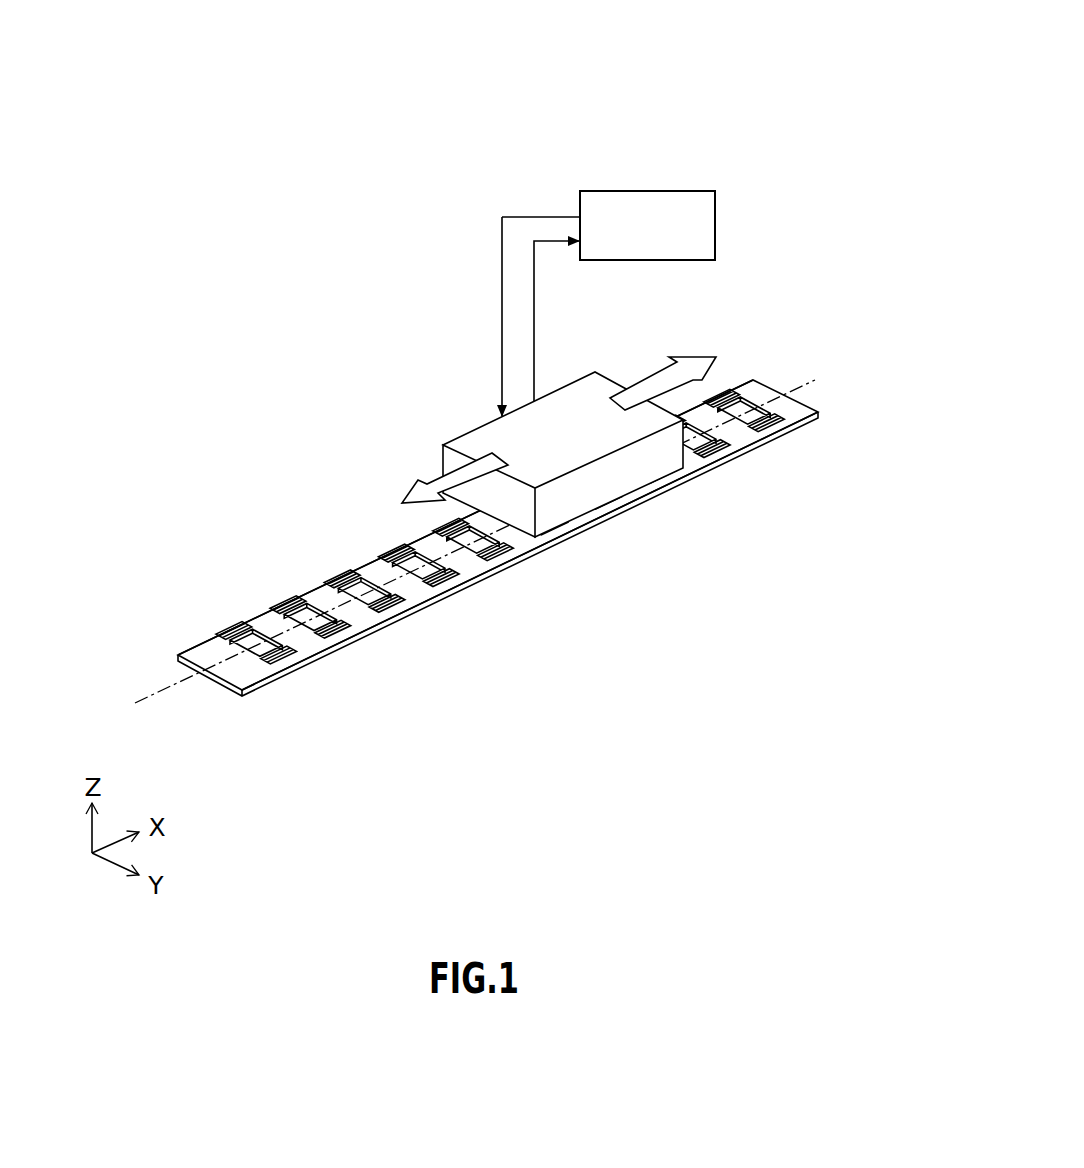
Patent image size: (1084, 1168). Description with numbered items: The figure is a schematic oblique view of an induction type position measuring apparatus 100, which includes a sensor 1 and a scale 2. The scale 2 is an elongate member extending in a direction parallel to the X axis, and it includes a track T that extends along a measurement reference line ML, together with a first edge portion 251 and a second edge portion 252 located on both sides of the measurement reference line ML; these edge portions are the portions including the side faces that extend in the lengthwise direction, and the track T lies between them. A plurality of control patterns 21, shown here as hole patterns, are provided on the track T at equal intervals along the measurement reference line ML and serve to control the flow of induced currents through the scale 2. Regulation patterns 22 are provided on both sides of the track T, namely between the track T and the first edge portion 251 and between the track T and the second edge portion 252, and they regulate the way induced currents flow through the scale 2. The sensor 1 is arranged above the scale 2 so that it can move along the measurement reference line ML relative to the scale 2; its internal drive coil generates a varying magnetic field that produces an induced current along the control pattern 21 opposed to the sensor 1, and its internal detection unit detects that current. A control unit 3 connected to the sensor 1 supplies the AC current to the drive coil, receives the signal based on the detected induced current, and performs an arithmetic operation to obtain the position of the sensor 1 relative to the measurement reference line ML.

The induction type position measuring apparatus 100 is at (704, 96).
The sensor 1 is at (476, 421).
The scale 2 is at (306, 584).
The control unit 3 is at (695, 221).
The control pattern 21 is at (299, 655).
The regulation pattern 22 is at (390, 550).
The first edge portion 251 is at (248, 619).
The second edge portion 252 is at (358, 633).
The track T is at (502, 540).
The measurement reference line ML is at (459, 555).